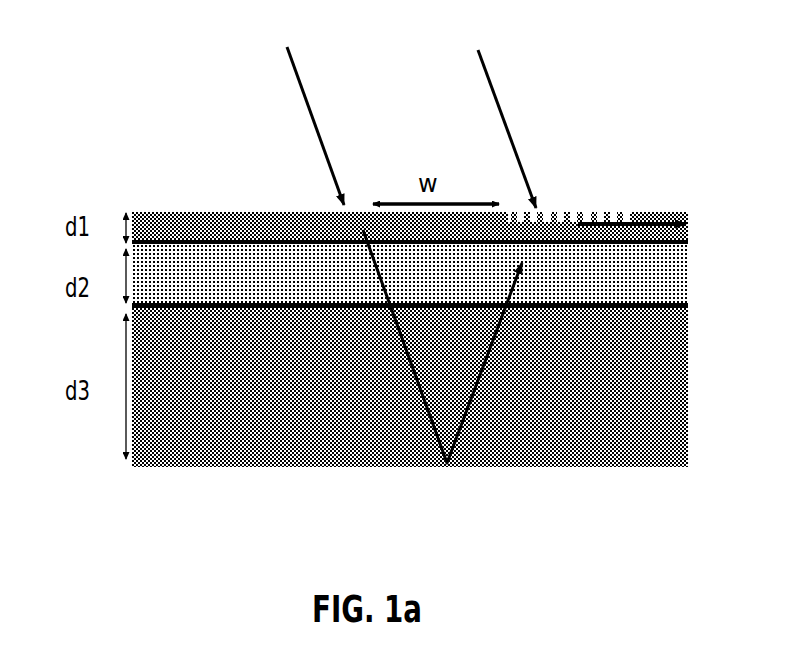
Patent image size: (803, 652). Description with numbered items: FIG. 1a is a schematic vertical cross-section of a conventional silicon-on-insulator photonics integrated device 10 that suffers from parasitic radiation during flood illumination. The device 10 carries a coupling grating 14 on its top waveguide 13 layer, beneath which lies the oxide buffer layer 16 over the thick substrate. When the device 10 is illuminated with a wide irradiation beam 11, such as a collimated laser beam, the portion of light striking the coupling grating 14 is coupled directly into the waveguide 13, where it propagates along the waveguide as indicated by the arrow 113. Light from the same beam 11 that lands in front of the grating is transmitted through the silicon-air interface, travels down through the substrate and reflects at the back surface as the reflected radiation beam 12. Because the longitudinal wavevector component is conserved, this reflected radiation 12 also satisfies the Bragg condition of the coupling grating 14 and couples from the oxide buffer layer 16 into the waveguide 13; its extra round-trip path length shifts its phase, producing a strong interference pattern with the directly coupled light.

The photonics integrated device 10 is at (141, 109).
The wide irradiation beam 11 is at (306, 100).
The reflected radiation beam 12 is at (465, 417).
The waveguide 13 is at (305, 211).
The coupling grating 14 is at (573, 203).
The oxide buffer layer 16 is at (268, 273).
The guided light 113 is at (656, 213).